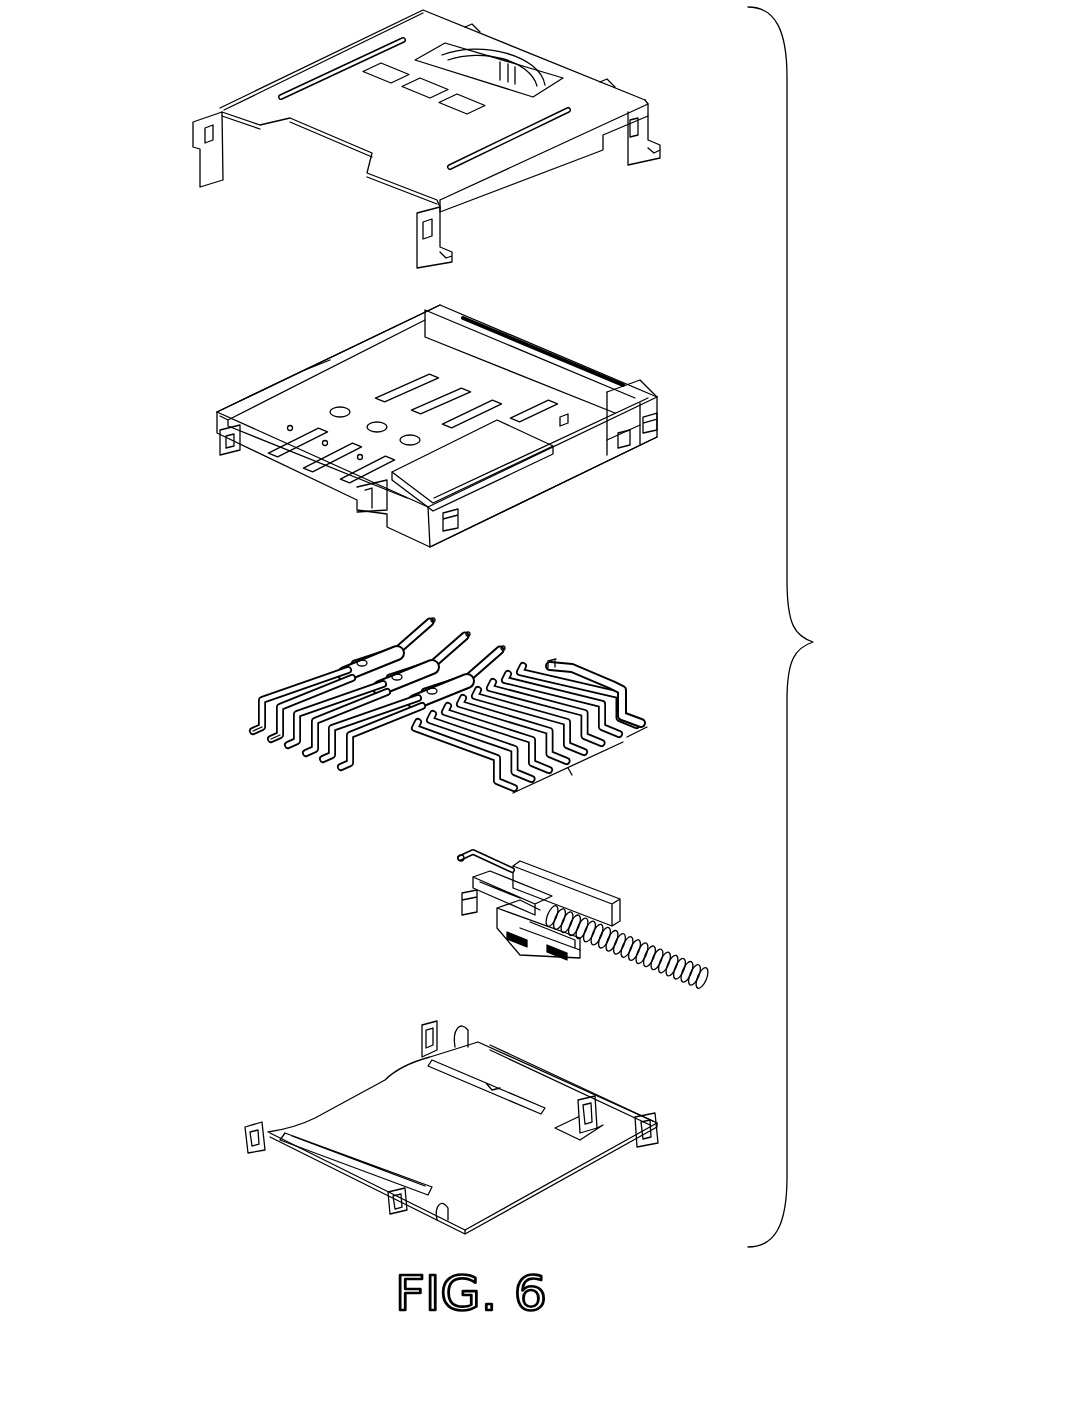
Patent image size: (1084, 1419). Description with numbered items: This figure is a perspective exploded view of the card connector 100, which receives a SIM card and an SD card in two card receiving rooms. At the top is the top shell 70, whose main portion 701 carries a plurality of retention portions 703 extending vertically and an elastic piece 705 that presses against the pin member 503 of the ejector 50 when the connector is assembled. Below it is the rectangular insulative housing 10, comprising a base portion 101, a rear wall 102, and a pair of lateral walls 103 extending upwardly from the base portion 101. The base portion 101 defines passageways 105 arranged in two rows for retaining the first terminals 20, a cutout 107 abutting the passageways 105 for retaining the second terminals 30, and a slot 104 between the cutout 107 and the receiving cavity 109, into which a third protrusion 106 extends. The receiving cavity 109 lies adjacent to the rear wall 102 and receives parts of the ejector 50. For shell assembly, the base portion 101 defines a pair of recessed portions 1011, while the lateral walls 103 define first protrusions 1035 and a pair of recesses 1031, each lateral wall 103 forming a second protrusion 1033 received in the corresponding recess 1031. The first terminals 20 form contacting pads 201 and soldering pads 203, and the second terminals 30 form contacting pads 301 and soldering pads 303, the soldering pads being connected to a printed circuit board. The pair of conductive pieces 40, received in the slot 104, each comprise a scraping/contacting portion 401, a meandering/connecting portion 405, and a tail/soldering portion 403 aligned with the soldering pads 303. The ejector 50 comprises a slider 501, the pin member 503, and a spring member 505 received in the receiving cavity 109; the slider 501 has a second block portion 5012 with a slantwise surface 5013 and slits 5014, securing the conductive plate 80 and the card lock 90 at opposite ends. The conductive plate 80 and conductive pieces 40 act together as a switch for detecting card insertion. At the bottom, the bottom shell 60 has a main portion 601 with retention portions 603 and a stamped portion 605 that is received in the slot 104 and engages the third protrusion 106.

The card connector 100 is at (813, 642).
The top shell 70 is at (421, 135).
The main portion 701 is at (345, 122).
The retention portions 703 is at (420, 247).
The elastic piece 705 is at (498, 62).
The insulative housing 10 is at (448, 420).
The base portion 101 is at (255, 433).
The recessed portions 1011 is at (238, 447).
The rear wall 102 is at (440, 310).
The lateral walls 103 is at (330, 365).
The recesses 1031 is at (605, 432).
The second protrusion 1033 is at (612, 450).
The first protrusions 1035 is at (468, 527).
The slot 104 is at (530, 418).
The passageways 105 is at (280, 460).
The third protrusion 106 is at (565, 420).
The cutout 107 is at (455, 475).
The receiving cavity 109 is at (470, 343).
The first terminals 20 is at (336, 672).
The contacting pads 201 is at (427, 620).
The soldering pads 203 is at (256, 725).
The second terminals 30 is at (502, 745).
The contacting pads 301 is at (425, 737).
The soldering pads 303 is at (500, 783).
The conductive pieces 40 is at (629, 683).
The scraping/contacting portion 401 is at (547, 665).
The tail/soldering portion 403 is at (642, 708).
The meandering/connecting portion 405 is at (593, 686).
The ejector 50 is at (555, 920).
The slider 501 is at (545, 888).
The pin member 503 is at (462, 856).
The spring member 505 is at (650, 950).
The second block portion 5012 is at (548, 952).
The slantwise surface 5013 is at (483, 930).
The slits 5014 is at (470, 880).
The conductive plate 80 is at (580, 950).
The card lock 90 is at (463, 908).
The bottom shell 60 is at (460, 1119).
The main portion 601 is at (505, 1185).
The retention portions 603 is at (425, 1025).
The stamped portion 605 is at (585, 1103).